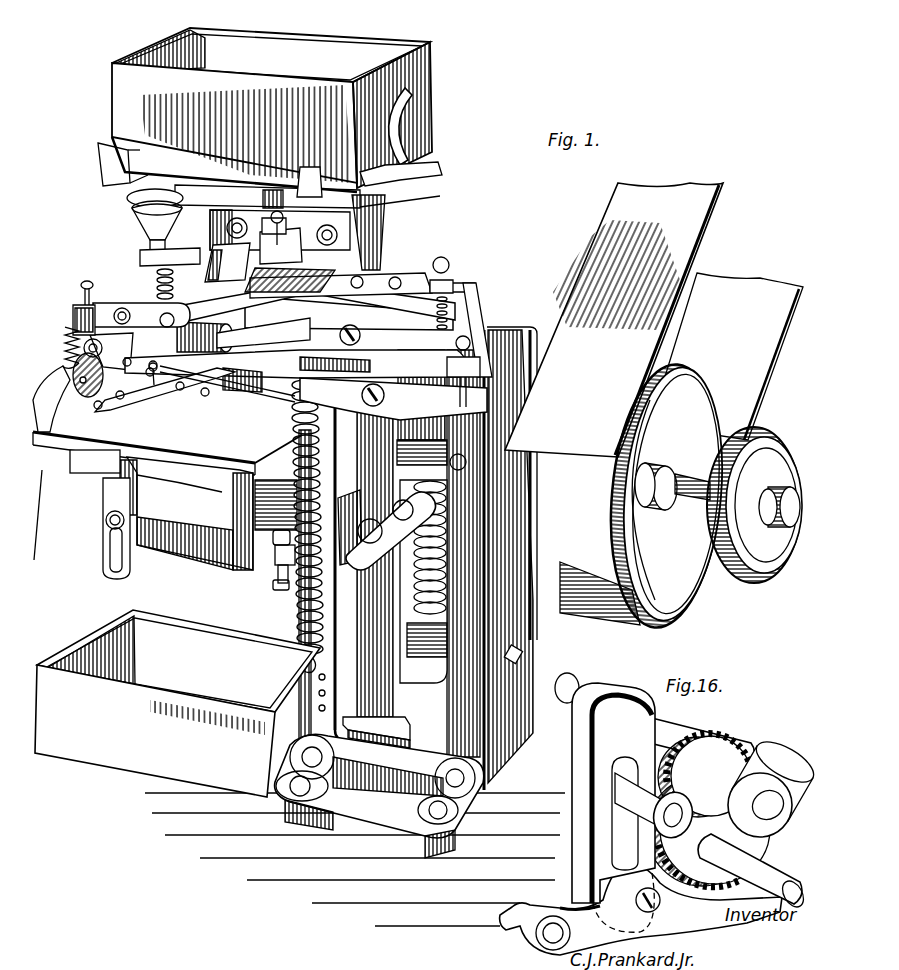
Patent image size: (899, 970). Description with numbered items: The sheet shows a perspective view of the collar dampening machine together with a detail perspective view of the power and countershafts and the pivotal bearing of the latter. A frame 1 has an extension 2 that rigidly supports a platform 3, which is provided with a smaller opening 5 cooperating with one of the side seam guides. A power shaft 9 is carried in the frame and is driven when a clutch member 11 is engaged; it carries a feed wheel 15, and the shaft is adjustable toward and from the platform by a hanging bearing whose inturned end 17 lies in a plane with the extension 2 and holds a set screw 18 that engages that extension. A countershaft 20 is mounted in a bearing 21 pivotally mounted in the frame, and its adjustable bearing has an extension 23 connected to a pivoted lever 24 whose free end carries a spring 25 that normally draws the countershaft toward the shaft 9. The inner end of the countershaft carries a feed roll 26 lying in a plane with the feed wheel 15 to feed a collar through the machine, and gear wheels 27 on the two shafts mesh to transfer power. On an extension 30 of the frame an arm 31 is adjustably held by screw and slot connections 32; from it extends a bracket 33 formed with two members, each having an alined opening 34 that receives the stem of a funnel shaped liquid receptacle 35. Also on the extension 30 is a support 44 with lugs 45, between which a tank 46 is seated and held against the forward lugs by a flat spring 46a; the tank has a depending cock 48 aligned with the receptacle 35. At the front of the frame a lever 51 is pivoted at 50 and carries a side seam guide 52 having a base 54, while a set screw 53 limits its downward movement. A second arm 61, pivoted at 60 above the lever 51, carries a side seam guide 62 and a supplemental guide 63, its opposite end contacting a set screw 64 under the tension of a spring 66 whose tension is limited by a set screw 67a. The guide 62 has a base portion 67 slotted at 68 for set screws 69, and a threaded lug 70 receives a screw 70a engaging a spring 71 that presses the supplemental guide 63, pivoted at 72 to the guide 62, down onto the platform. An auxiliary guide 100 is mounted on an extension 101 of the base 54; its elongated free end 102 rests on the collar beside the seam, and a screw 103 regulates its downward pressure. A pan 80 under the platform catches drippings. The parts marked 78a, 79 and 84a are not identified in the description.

In FIG. 1, the frame 1 is at (522, 668).
In FIG. 1, the extension 2 is at (208, 513).
In FIG. 1, the platform 3 is at (258, 560).
In FIG. 1, the smaller opening 5 is at (96, 408).
In FIG. 1, the power shaft 9 is at (672, 520).
In FIG. 16, the power shaft 9 is at (793, 881).
In FIG. 1, the clutch member 11 is at (714, 480).
In FIG. 1, the feed wheel 15 is at (230, 390).
In FIG. 1, the inturned end 17 is at (276, 588).
In FIG. 1, the set screw 18 is at (280, 592).
In FIG. 1, the countershaft 20 is at (250, 350).
In FIG. 16, the countershaft 20 is at (664, 744).
In FIG. 1, the bearing 21 is at (516, 386).
In FIG. 16, the bearing 21 is at (756, 778).
In FIG. 1, the extension 23 is at (275, 556).
In FIG. 16, the extension 23 is at (604, 868).
In FIG. 1, the pivoted lever 24 is at (420, 490).
In FIG. 16, the pivoted lever 24 is at (643, 852).
In FIG. 1, the spring 25 is at (442, 520).
In FIG. 16, the spring 25 is at (725, 845).
In FIG. 1, the feed roll 26 is at (215, 326).
In FIG. 16, the gear wheels 27 is at (740, 762).
In FIG. 1, the extension 30 is at (340, 233).
In FIG. 1, the arm 31 is at (243, 197).
In FIG. 1, the screw and slot connections 32 is at (373, 210).
In FIG. 1, the bracket 33 is at (225, 256).
In FIG. 1, the alined opening 34 is at (150, 258).
In FIG. 1, the funnel shaped liquid receptacle 35 is at (140, 220).
In FIG. 1, the support 44 is at (404, 173).
In FIG. 1, the lugs 45 is at (231, 168).
In FIG. 1, the tank 46 is at (272, 110).
In FIG. 1, the flat spring 46a is at (400, 97).
In FIG. 1, the depending cock 48 is at (148, 172).
In FIG. 1, the pivot 50 is at (376, 386).
In FIG. 1, the lever 51 is at (393, 399).
In FIG. 1, the side seam guide 52 is at (128, 392).
In FIG. 1, the set screw 53 is at (466, 338).
In FIG. 1, the base 54 is at (66, 342).
In FIG. 1, the pivot 60 is at (340, 336).
In FIG. 1, the second arm 61 is at (302, 326).
In FIG. 1, the side seam guide 62 is at (56, 432).
In FIG. 1, the supplemental guide 63 is at (44, 450).
In FIG. 1, the set screw 64 is at (450, 272).
In FIG. 1, the spring 66 is at (402, 285).
In FIG. 1, the base portion 67 is at (118, 294).
In FIG. 1, the set screw 67a is at (253, 250).
In FIG. 1, the slot 68 is at (100, 326).
In FIG. 1, the set screws 69 is at (74, 310).
In FIG. 1, the threaded lug 70 is at (700, 408).
In FIG. 1, the screw 70a is at (92, 278).
In FIG. 1, the spring 71 is at (70, 358).
In FIG. 1, the pivot 72 is at (628, 510).
In FIG. 1, the plate 78a is at (95, 461).
In FIG. 1, the slotted bracket 79 is at (104, 536).
In FIG. 1, the pan 80 is at (177, 703).
In FIG. 1, the spring 84a is at (300, 626).
In FIG. 1, the auxiliary guide 100 is at (152, 378).
In FIG. 1, the extension 101 is at (208, 397).
In FIG. 1, the free end 102 is at (120, 400).
In FIG. 1, the screw 103 is at (182, 392).